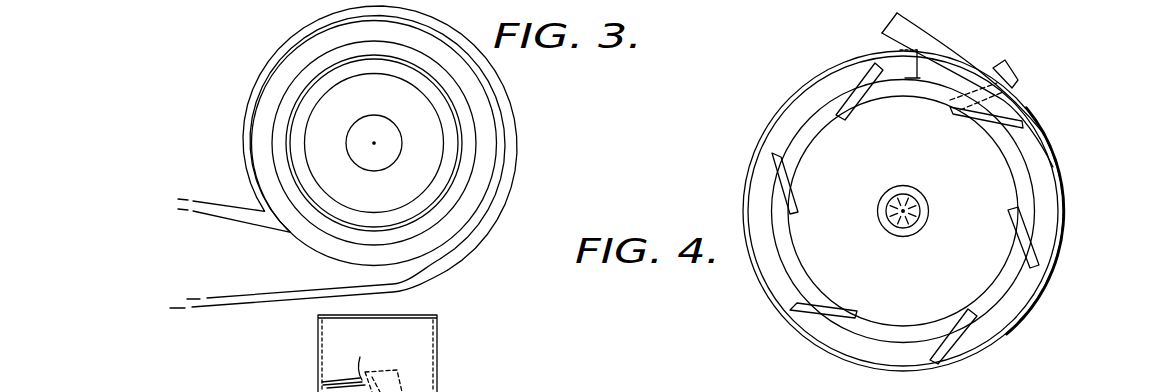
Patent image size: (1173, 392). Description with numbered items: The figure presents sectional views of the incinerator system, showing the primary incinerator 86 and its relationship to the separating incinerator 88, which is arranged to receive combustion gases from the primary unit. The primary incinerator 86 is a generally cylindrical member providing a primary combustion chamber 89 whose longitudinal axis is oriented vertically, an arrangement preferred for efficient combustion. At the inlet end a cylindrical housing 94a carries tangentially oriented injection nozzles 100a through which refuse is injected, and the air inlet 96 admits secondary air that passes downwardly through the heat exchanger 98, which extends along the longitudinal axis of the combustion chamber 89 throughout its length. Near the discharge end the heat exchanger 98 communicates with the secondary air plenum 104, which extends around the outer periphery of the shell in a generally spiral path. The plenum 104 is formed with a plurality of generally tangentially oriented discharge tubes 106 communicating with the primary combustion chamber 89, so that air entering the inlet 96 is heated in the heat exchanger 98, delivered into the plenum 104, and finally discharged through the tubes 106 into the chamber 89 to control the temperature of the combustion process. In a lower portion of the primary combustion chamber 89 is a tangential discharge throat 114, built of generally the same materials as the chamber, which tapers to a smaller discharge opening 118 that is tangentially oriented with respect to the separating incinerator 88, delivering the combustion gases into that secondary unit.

In FIG. 3, the separating incinerator 88 is at (508, 108).
In FIG. 3, the tangential discharge throat 114 is at (207, 202).
In FIG. 3, the smaller discharge opening 118 is at (370, 275).
In FIG. 3, the cylindrical housing 94a is at (438, 363).
In FIG. 3, the injection nozzles 100a is at (362, 381).
In FIG. 3, the primary incinerator 86 is at (250, 389).
In FIG. 4, the primary incinerator 86 is at (770, 193).
In FIG. 3, the air inlet 96 is at (538, 391).
In FIG. 4, the secondary air plenum 104 is at (750, 264).
In FIG. 4, the primary combustion chamber 89 is at (925, 172).
In FIG. 4, the heat exchanger 98 is at (877, 212).
In FIG. 4, the discharge tubes 106 is at (797, 212).